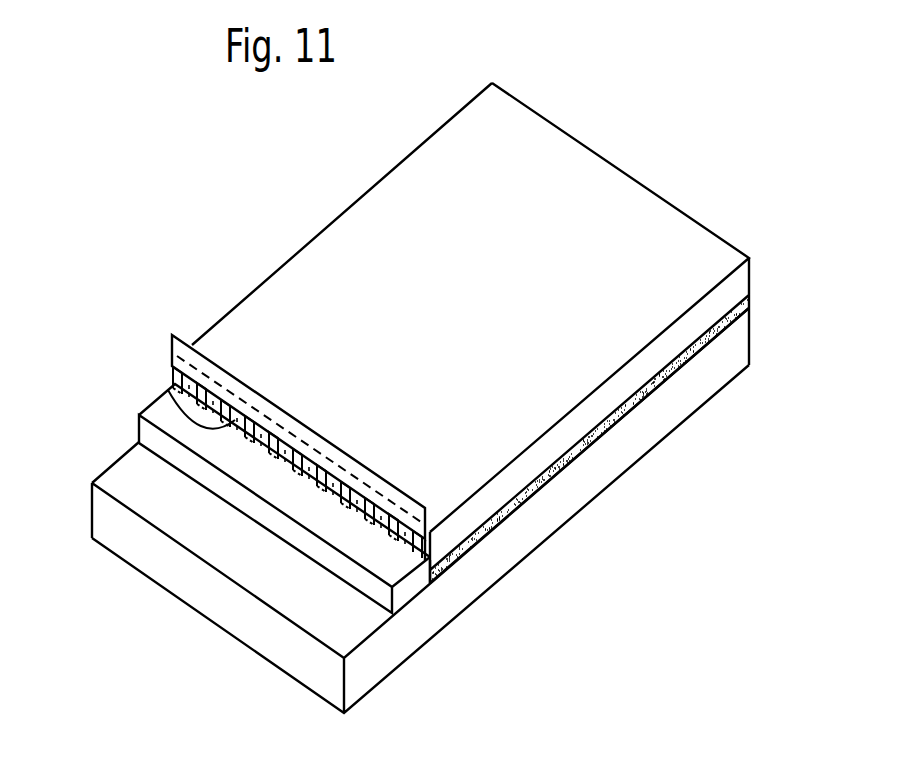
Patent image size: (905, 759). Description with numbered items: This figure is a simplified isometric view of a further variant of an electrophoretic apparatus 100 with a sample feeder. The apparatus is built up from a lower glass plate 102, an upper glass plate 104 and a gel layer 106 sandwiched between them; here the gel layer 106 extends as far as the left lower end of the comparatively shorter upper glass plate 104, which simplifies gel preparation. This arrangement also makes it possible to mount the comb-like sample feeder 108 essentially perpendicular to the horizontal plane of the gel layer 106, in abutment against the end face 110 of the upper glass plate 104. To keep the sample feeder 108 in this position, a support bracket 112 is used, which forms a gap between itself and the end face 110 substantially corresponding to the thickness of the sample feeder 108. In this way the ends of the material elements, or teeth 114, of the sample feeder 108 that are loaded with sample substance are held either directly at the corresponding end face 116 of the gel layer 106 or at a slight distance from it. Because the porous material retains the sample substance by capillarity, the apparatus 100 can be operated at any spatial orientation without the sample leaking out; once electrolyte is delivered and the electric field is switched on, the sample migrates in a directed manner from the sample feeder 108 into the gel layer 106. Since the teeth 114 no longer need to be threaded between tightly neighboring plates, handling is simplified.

The electrophoretic apparatus 100 is at (237, 283).
The lower glass plate 102 is at (558, 506).
The upper glass plate 104 is at (693, 250).
The gel layer 106 is at (642, 397).
The comb-like sample feeder 108 is at (285, 408).
The end face 110 is at (432, 557).
The support bracket 112 is at (153, 436).
The material elements (teeth) 114 is at (187, 402).
The end face of the gel layer 116 is at (440, 560).